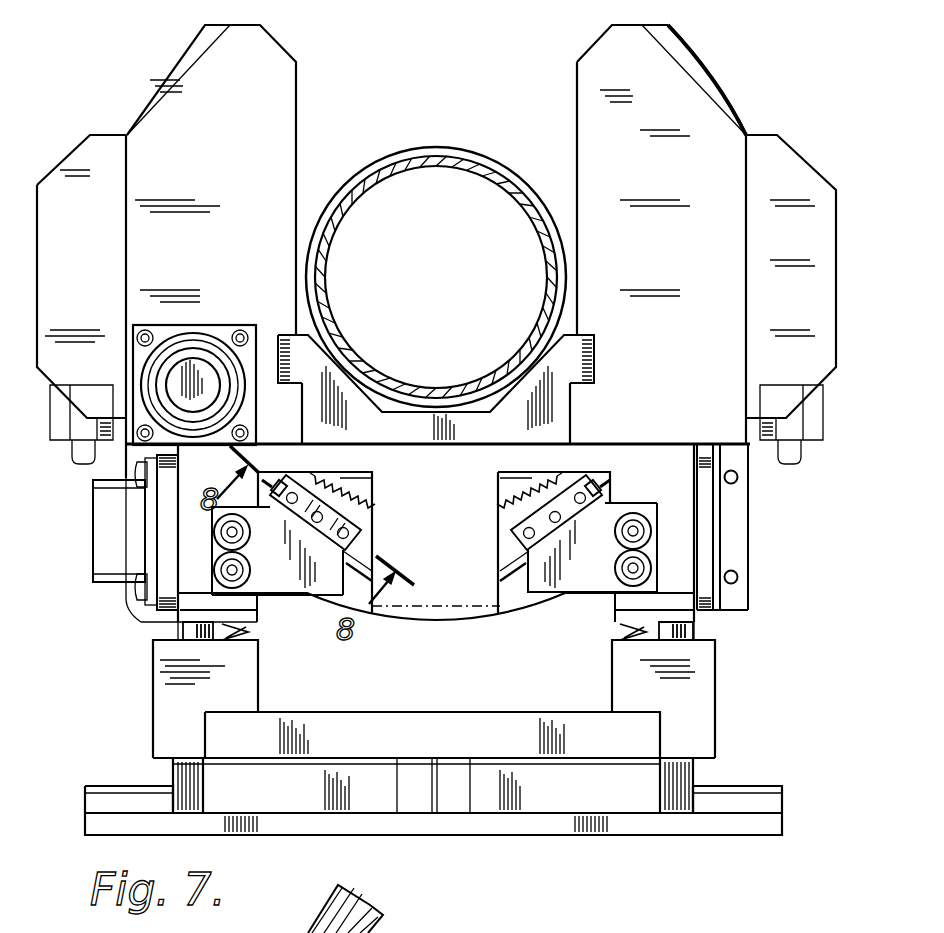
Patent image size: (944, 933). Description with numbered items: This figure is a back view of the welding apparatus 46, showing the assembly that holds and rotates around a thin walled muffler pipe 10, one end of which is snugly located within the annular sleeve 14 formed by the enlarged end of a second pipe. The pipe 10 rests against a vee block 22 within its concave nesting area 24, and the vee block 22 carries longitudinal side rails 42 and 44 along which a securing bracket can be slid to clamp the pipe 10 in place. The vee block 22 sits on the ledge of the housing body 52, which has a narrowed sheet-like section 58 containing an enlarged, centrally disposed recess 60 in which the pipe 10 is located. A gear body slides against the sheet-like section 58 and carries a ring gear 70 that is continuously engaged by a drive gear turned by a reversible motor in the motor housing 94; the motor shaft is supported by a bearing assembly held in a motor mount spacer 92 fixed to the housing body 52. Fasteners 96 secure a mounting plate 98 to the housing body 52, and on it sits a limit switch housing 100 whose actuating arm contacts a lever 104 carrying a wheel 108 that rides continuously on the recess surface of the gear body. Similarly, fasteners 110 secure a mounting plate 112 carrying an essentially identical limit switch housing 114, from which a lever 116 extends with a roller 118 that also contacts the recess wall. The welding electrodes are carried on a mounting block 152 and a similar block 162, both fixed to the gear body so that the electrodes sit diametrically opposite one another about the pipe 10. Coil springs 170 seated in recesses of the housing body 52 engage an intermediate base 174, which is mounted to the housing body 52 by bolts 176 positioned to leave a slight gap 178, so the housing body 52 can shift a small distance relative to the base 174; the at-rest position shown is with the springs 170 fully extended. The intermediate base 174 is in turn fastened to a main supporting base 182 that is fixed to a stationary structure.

The muffler pipe 10 is at (472, 163).
The annular sleeve 14 is at (450, 147).
The vee block 22 is at (560, 414).
The concave nesting area 24 is at (472, 385).
The longitudinal side rail 42 is at (338, 330).
The longitudinal side rail 44 is at (556, 352).
The welding apparatus 46 is at (703, 44).
The housing body 52 is at (304, 932).
The sheet-like section 58 is at (279, 48).
The recess 60 is at (577, 68).
The ring gear 70 is at (366, 490).
The motor mount spacer 92 is at (140, 366).
The motor housing 94 is at (157, 391).
The fasteners 96 is at (215, 567).
The mounting plate 98 is at (270, 580).
The limit switch housing 100 is at (372, 540).
The lever 104 is at (281, 484).
The wheel 108 is at (277, 551).
The fasteners 110 is at (640, 566).
The mounting plate 112 is at (605, 590).
The limit switch housing 114 is at (518, 556).
The lever 116 is at (606, 493).
The roller 118 is at (600, 482).
The mounting block 152 is at (800, 156).
The block 162 is at (95, 147).
The coil spring 170 is at (245, 633).
The intermediate base 174 is at (716, 712).
The bolts 176 is at (183, 632).
The gap 178 is at (700, 633).
The main supporting base 182 is at (600, 835).